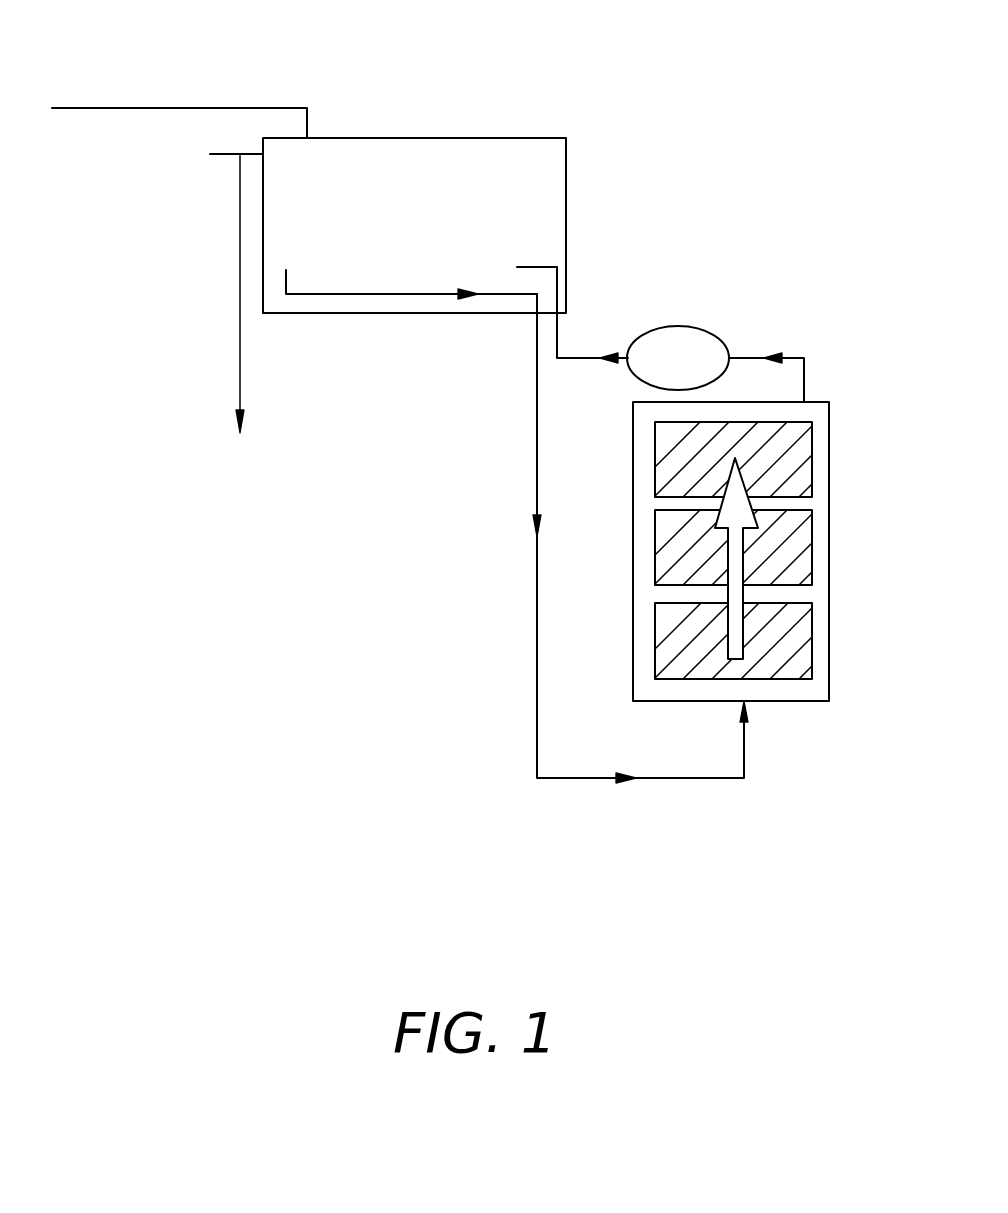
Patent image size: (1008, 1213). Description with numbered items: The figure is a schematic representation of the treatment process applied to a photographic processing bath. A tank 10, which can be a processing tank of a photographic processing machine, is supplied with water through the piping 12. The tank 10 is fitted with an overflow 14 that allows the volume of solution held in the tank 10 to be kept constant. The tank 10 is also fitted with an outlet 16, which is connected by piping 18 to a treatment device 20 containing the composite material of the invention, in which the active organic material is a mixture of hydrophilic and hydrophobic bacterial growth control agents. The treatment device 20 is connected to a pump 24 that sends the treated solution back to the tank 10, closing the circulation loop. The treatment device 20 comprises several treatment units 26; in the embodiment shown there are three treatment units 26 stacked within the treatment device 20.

The tank 10 is at (542, 168).
The piping 12 is at (155, 108).
The overflow 14 is at (240, 269).
The outlet 16 is at (424, 294).
The piping 18 is at (535, 615).
The treatment device 20 is at (786, 564).
The pump 24 is at (685, 337).
The treatment unit 26 is at (798, 460).